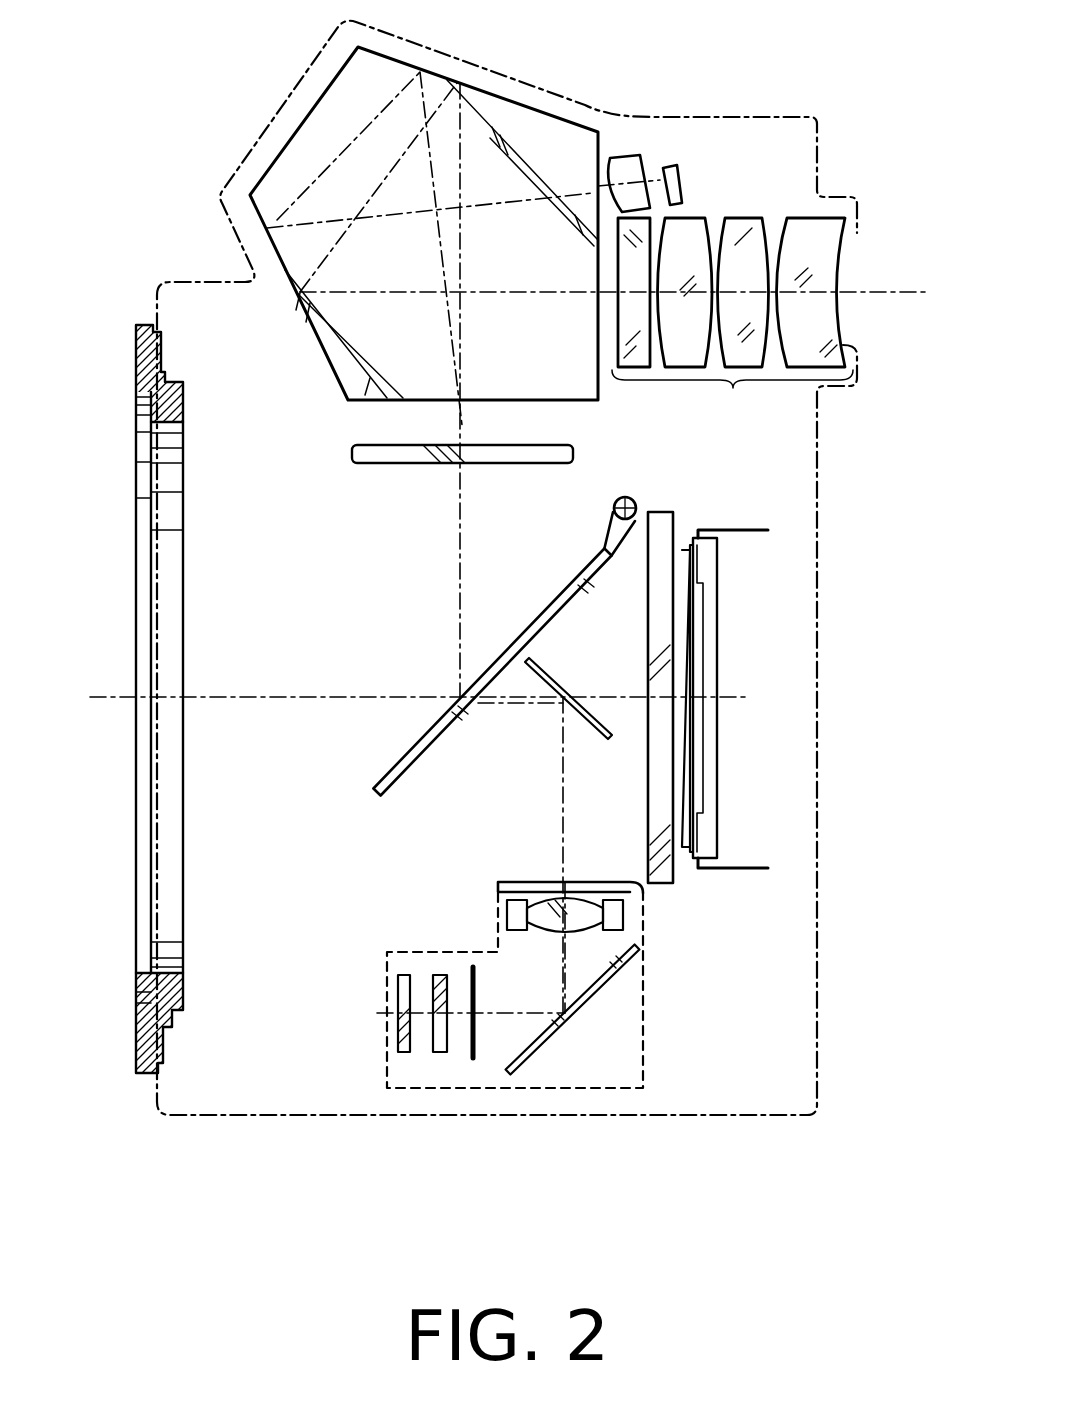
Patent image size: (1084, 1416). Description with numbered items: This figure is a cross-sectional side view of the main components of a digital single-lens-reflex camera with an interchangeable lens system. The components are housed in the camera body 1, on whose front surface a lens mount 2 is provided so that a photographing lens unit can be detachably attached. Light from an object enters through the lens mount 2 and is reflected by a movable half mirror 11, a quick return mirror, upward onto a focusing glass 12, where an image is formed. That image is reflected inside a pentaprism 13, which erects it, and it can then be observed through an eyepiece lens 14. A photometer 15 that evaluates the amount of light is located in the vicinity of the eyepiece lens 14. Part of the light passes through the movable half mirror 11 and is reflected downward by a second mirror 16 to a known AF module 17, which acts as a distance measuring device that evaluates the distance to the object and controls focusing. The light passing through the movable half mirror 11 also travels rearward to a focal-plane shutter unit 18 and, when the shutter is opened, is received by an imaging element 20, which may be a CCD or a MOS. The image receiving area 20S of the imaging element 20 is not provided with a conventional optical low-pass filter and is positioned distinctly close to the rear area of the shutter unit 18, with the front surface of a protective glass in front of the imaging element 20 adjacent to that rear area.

The camera body 1 is at (483, 1115).
The lens mount 2 is at (142, 1033).
The movable half mirror 11 is at (427, 757).
The focusing glass 12 is at (400, 467).
The pentaprism 13 is at (483, 113).
The eyepiece lens 14 is at (733, 388).
The photometer 15 is at (683, 197).
The second mirror 16 is at (553, 677).
The AF module 17 is at (643, 1042).
The focal-plane shutter unit 18 is at (645, 817).
The imaging element 20 is at (718, 737).
The image receiving area 20S is at (680, 553).